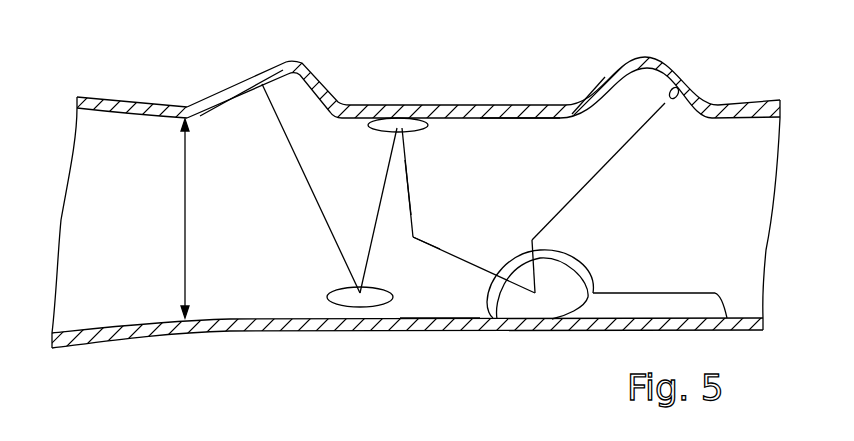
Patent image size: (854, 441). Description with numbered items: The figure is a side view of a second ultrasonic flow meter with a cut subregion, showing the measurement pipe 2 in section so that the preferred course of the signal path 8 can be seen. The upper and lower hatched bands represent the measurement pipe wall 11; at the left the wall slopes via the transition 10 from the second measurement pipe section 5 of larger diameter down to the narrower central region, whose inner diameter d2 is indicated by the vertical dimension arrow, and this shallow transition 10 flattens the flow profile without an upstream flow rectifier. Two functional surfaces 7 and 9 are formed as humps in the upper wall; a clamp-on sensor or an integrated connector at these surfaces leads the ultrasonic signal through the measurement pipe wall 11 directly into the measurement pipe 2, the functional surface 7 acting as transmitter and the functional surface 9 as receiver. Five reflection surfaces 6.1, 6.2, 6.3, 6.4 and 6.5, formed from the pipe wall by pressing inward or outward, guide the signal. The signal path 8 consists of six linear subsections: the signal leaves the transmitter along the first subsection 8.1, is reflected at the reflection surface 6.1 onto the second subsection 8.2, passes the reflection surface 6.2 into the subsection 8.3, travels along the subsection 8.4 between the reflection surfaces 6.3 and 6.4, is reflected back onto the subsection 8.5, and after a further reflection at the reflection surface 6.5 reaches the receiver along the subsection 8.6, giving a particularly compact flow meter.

The measurement pipe 2 is at (98, 333).
The second measurement pipe section 5 is at (440, 325).
The reflection surface 6.1 is at (380, 308).
The reflection surface 6.2 is at (402, 113).
The reflection surface 6.3 is at (428, 237).
The reflection surface 6.4 is at (558, 322).
The reflection surface 6.5 is at (527, 225).
The functional surface 7 is at (277, 75).
The signal path 8 is at (413, 163).
The first subsection 8.1 is at (308, 187).
The second subsection 8.2 is at (373, 233).
The third subsection 8.3 is at (413, 200).
The subsection 8.4 is at (460, 260).
The subsection 8.5 is at (535, 245).
The sixth subsection 8.6 is at (613, 158).
The functional surface 9 is at (683, 80).
The transition 10 is at (147, 113).
The measurement pipe wall 11 is at (517, 102).
The inner diameter d2 is at (199, 218).